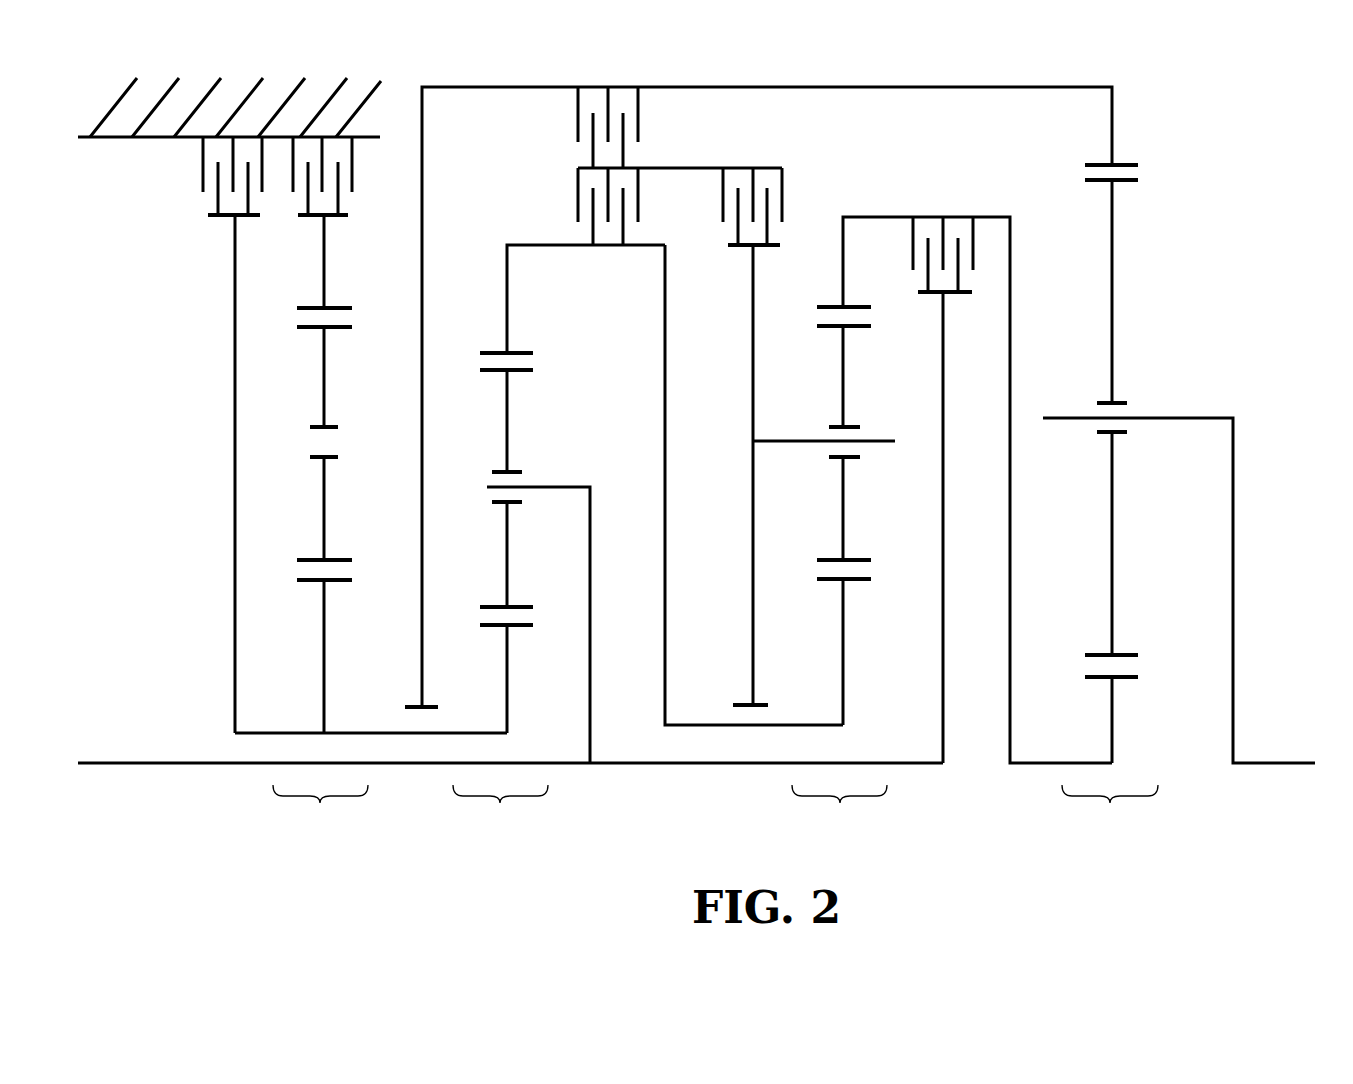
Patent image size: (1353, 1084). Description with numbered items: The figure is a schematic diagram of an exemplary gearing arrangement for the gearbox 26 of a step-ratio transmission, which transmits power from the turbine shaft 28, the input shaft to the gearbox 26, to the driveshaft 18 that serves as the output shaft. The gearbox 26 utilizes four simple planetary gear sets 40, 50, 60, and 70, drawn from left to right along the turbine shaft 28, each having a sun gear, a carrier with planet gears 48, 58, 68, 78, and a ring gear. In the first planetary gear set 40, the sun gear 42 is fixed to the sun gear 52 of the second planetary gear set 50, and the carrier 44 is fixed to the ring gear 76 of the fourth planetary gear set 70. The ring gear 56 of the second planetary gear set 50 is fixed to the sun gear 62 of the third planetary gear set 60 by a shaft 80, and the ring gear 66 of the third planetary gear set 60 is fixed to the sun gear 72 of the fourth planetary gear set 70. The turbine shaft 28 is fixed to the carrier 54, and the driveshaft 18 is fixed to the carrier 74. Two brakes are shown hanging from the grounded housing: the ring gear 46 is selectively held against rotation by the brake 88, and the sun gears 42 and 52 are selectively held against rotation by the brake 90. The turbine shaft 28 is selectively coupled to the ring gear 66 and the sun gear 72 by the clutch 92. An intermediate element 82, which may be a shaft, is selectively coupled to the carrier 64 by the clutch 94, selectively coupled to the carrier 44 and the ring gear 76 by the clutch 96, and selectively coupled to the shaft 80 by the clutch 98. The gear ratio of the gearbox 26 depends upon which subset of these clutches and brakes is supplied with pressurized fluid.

The driveshaft 18 is at (1258, 763).
The gearbox 26 is at (742, 785).
The turbine shaft 28 is at (212, 765).
The planetary gear set 40 is at (320, 811).
The sun gear 42 is at (324, 675).
The carrier 44 is at (422, 192).
The ring gear 46 is at (324, 290).
The first planet gears 48 is at (324, 402).
The planetary gear set 50 is at (500, 811).
The sun gear 52 is at (507, 693).
The carrier 54 is at (590, 632).
The ring gear 56 is at (507, 312).
The second planet gears 58 is at (507, 447).
The planetary gear set 60 is at (839, 811).
The sun gear 62 is at (843, 663).
The carrier 64 is at (753, 352).
The ring gear 66 is at (843, 240).
The third planet gears 68 is at (843, 400).
The planetary gear set 70 is at (1110, 811).
The sun gear 72 is at (1112, 740).
The carrier 74 is at (1147, 418).
The ring gear 76 is at (1112, 150).
The fourth planet gears 78 is at (1112, 290).
The shaft 80 is at (665, 443).
The intermediate element 82 is at (653, 170).
The brake 88 is at (352, 165).
The brake 90 is at (203, 165).
The clutch 92 is at (952, 217).
The clutch 94 is at (735, 168).
The clutch 96 is at (578, 103).
The clutch 98 is at (578, 178).